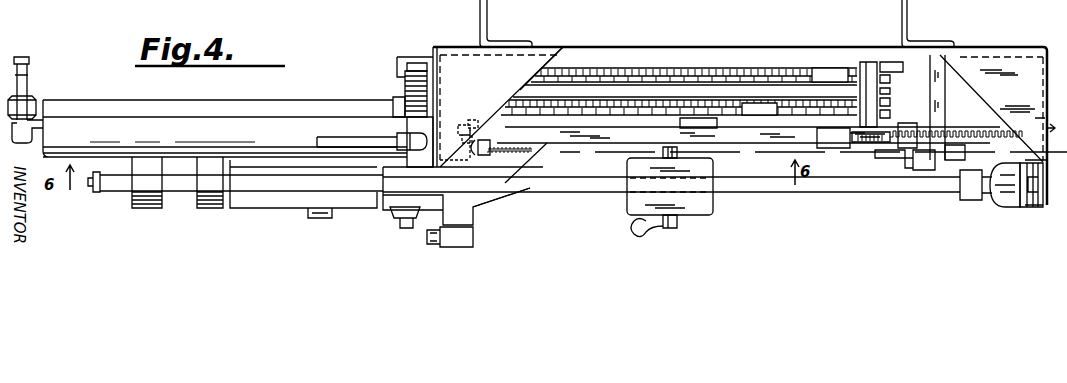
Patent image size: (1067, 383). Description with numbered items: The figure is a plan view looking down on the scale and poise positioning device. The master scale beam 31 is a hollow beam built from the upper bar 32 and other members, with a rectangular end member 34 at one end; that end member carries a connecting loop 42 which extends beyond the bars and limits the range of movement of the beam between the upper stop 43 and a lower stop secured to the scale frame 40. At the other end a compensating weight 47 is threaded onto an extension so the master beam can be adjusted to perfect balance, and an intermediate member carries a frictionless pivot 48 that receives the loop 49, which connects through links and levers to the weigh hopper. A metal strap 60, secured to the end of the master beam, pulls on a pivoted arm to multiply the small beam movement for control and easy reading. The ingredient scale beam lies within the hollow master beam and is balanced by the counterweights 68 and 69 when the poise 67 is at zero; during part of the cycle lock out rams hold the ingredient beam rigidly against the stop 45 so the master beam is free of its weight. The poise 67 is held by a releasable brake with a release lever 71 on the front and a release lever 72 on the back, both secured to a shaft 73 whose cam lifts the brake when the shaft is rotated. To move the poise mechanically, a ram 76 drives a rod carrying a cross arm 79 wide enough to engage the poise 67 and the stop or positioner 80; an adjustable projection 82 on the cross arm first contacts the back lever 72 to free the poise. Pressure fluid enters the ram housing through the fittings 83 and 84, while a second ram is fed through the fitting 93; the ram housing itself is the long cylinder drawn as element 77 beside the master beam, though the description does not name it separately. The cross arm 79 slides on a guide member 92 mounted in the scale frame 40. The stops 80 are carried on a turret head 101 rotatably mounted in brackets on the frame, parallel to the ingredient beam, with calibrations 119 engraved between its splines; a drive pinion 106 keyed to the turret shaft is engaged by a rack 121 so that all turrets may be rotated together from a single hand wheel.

The master scale beam 31 is at (755, 196).
The upper bar 32 is at (875, 188).
The end member 34 is at (970, 200).
The scale frame 40 is at (1045, 230).
The connecting loop 42 is at (988, 197).
The upper stop 43 is at (1025, 207).
The stop 45 is at (1005, 172).
The compensating weight 47 is at (143, 206).
The frictionless pivot 48 is at (406, 228).
The loop 49 is at (393, 212).
The metal strap 60 is at (96, 192).
The poise 67 is at (700, 208).
The counterweight 68 is at (277, 202).
The counterweight 69 is at (207, 206).
The release lever 71 is at (640, 234).
The release lever 72 is at (680, 153).
The shaft 73 is at (672, 228).
The ram 76 is at (218, 122).
The tube top wall 77 is at (160, 103).
The cross arm 79 is at (466, 114).
The stop 80 is at (828, 70).
The adjustable projection 82 is at (490, 155).
The fitting 83 is at (27, 140).
The fitting 84 is at (420, 130).
The guide member 92 is at (578, 137).
The fitting 93 is at (48, 105).
The turret head 101 is at (760, 85).
The drive pinion 106 is at (405, 85).
The calibrations 119 is at (702, 76).
The rack 121 is at (410, 62).